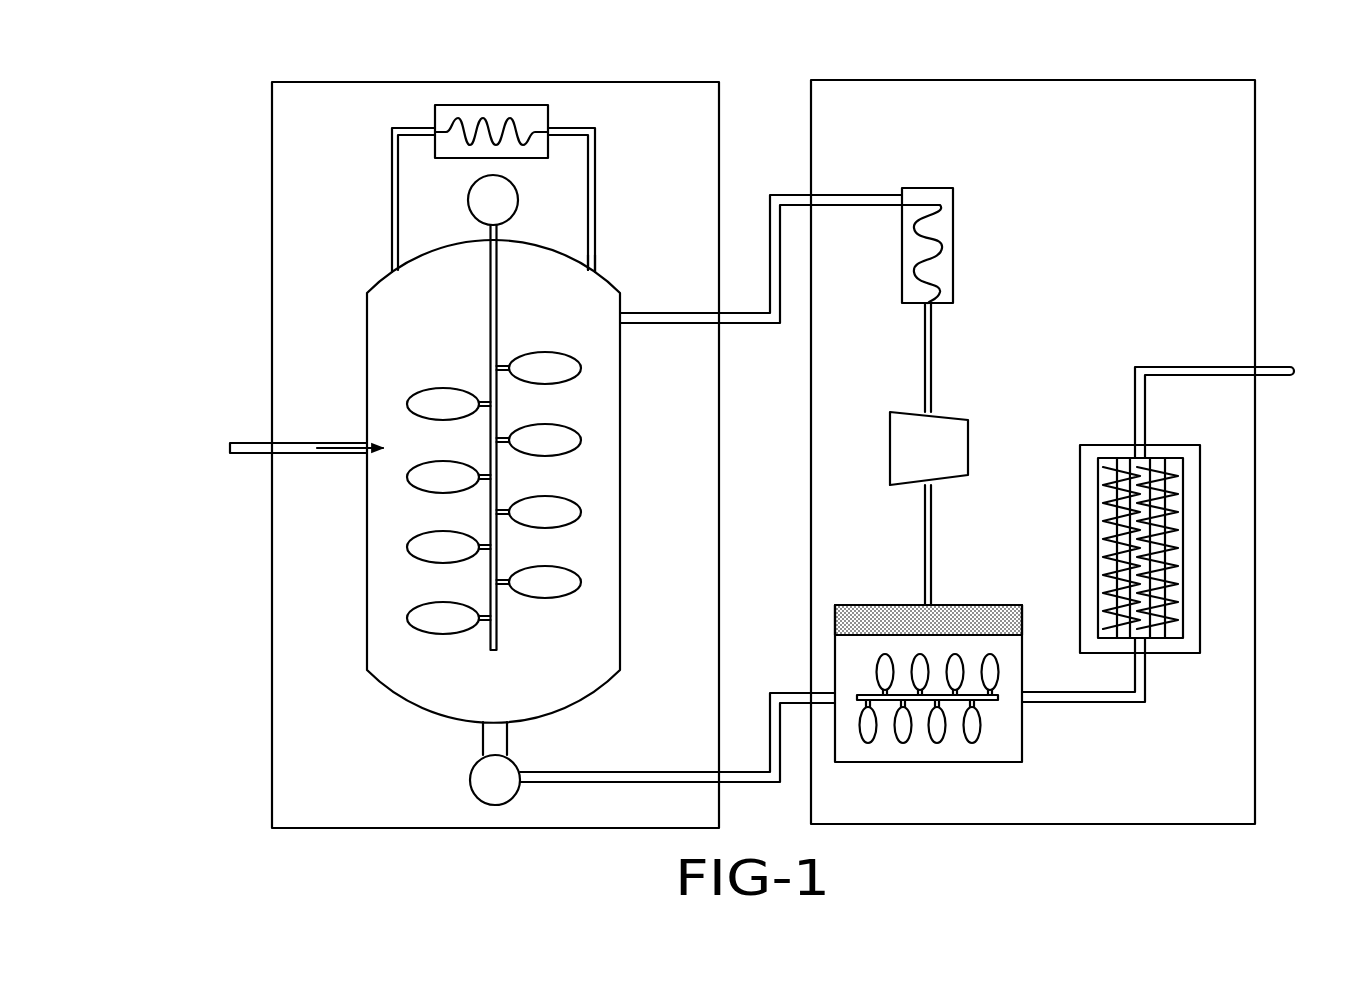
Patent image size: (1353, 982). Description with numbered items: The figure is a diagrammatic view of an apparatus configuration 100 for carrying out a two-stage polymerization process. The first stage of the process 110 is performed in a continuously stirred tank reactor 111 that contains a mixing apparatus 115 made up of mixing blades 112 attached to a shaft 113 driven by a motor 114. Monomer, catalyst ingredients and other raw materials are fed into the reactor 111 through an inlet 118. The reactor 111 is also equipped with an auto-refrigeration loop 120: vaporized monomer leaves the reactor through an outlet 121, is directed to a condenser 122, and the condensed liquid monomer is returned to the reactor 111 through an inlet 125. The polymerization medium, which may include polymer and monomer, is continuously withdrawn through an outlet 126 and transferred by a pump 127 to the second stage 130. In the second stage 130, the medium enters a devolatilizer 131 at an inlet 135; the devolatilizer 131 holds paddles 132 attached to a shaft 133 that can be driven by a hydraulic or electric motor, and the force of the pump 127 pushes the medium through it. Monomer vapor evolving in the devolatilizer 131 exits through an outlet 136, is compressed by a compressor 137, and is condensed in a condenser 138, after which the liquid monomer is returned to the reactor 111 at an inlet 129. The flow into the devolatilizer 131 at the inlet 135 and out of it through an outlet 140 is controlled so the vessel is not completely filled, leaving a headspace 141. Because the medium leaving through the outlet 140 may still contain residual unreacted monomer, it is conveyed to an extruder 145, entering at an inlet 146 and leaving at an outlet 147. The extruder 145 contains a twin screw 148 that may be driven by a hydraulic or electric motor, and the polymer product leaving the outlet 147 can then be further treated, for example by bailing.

The configuration 100 is at (205, 142).
The first stage of the process 110 is at (500, 76).
The continuously stirred tank reactor 111 is at (392, 690).
The mixing blades 112 is at (570, 442).
The shaft 113 is at (500, 290).
The motor 114 is at (470, 190).
The mixing apparatus 115 is at (548, 454).
The inlet 118 is at (296, 452).
The auto-refrigeration loop 120 is at (597, 175).
The outlet 121 is at (597, 268).
The condenser 122 is at (436, 127).
The inlet 125 is at (393, 268).
The outlet 126 is at (508, 724).
The pump 127 is at (470, 790).
The inlet 129 is at (628, 327).
The second stage 130 is at (953, 76).
The devolatilizer 131 is at (926, 659).
The paddles 132 is at (900, 735).
The shaft 133 is at (985, 702).
The inlet 135 is at (835, 698).
The outlet 136 is at (925, 604).
The compressor 137 is at (953, 418).
The condenser 138 is at (954, 254).
The outlet 140 is at (1025, 700).
The headspace 141 is at (965, 618).
The extruder 145 is at (1172, 549).
The inlet 146 is at (1140, 650).
The outlet 147 is at (1136, 445).
The twin screw 148 is at (1155, 550).